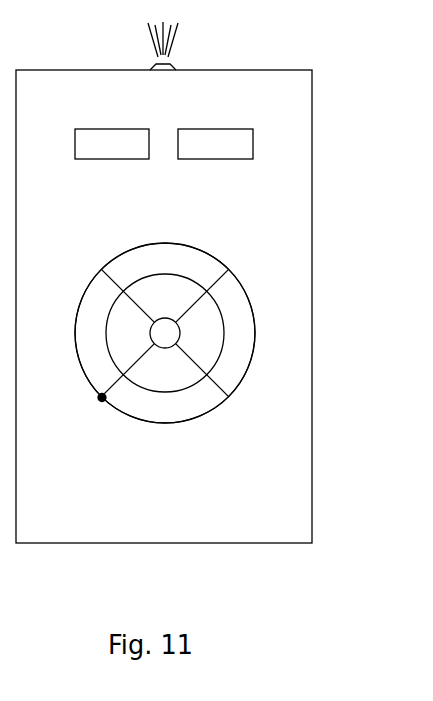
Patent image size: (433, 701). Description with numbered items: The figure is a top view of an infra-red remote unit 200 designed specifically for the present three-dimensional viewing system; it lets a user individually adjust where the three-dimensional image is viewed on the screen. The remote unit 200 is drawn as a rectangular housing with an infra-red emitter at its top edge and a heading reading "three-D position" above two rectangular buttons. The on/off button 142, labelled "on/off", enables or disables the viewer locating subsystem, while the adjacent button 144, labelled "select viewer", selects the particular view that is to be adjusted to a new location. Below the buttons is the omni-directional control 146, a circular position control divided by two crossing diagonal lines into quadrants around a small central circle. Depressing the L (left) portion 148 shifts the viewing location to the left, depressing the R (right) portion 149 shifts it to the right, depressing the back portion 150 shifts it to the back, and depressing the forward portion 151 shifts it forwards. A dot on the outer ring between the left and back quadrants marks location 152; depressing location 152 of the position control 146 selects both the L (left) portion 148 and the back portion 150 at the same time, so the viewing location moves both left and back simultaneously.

The on/off button 142 is at (89, 137).
The button 144 is at (237, 137).
The omni-directional control 146 is at (128, 320).
The L (left) portion 148 is at (92, 358).
The R (right) portion 149 is at (238, 380).
The back portion 150 is at (137, 408).
The forward portion 151 is at (212, 265).
The location 152 is at (103, 399).
The infra-red remote unit 200 is at (335, 308).